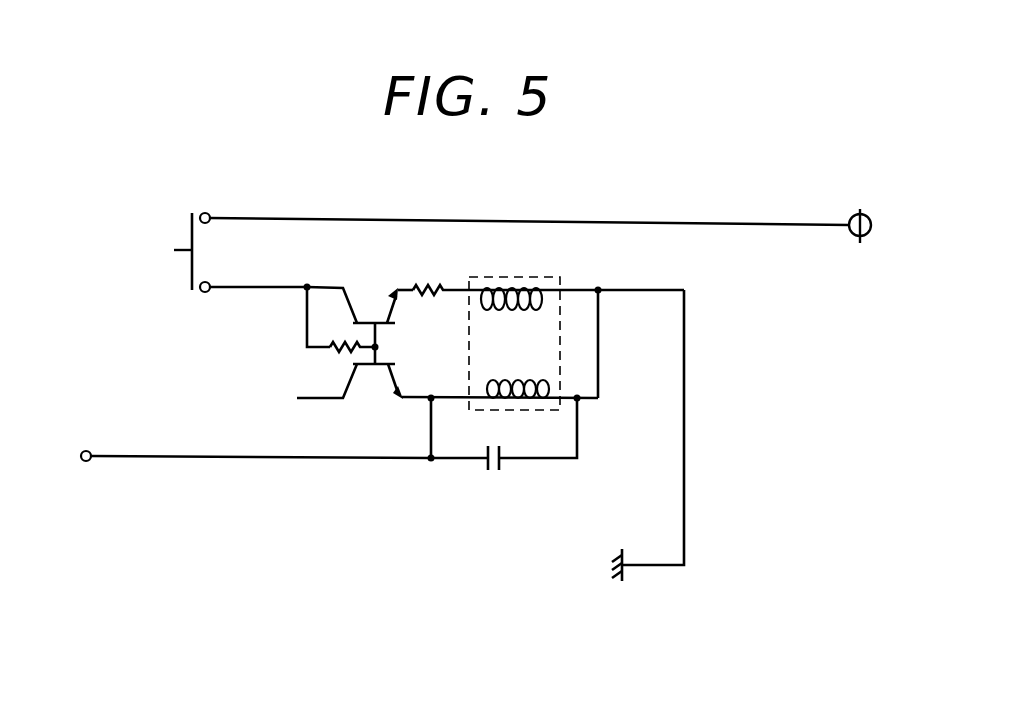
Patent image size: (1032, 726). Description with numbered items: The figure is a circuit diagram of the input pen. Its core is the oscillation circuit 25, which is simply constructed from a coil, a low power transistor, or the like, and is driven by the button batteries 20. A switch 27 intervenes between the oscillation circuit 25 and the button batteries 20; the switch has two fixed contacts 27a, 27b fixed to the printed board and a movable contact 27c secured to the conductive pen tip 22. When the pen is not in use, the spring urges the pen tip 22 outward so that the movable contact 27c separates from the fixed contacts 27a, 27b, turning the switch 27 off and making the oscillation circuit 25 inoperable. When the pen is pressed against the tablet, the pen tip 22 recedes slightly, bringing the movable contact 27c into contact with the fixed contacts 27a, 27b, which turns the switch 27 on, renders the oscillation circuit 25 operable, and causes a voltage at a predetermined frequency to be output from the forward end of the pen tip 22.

The switch 27 is at (197, 212).
The fixed contact 27a is at (210, 214).
The fixed contact 27b is at (208, 293).
The movable contact 27c is at (180, 263).
The button batteries 20 is at (867, 216).
The conductive pen tip 22 is at (85, 462).
The oscillation circuit 25 is at (456, 476).